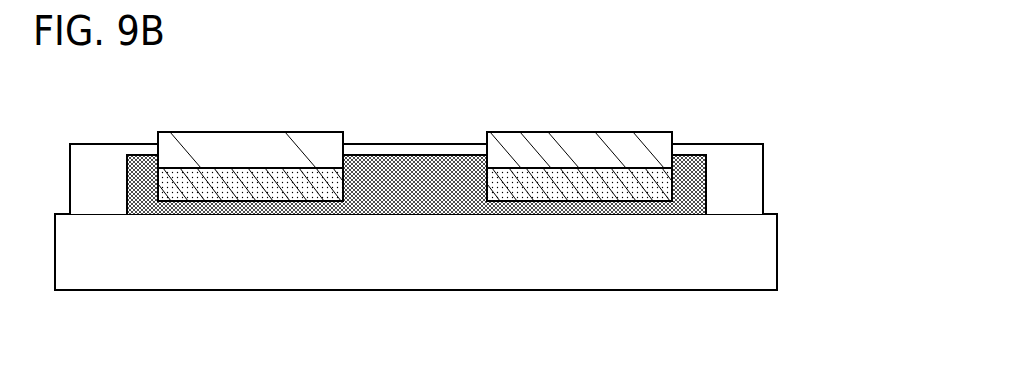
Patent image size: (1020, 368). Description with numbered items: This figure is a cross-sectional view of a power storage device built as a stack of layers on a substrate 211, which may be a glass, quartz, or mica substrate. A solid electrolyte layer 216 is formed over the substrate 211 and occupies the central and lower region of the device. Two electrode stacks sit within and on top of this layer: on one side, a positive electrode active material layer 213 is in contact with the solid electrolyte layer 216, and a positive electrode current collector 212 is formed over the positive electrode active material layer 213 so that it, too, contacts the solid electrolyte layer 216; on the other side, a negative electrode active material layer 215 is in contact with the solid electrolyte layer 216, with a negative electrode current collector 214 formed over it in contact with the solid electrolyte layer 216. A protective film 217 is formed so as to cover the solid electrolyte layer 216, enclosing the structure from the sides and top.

The substrate 211 is at (430, 282).
The positive electrode current collector 212 is at (237, 148).
The positive electrode active material layer 213 is at (242, 192).
The negative electrode current collector 214 is at (583, 147).
The negative electrode active material layer 215 is at (597, 192).
The solid electrolyte layer 216 is at (413, 170).
The protective film 217 is at (730, 162).